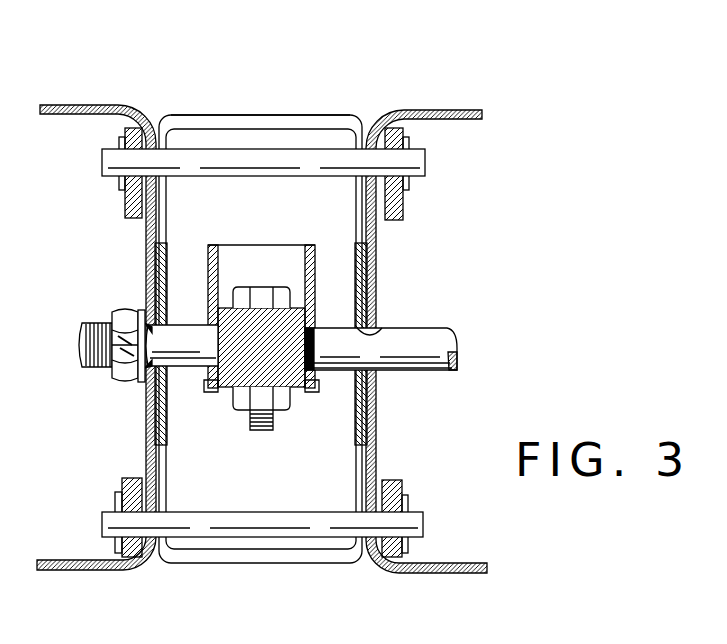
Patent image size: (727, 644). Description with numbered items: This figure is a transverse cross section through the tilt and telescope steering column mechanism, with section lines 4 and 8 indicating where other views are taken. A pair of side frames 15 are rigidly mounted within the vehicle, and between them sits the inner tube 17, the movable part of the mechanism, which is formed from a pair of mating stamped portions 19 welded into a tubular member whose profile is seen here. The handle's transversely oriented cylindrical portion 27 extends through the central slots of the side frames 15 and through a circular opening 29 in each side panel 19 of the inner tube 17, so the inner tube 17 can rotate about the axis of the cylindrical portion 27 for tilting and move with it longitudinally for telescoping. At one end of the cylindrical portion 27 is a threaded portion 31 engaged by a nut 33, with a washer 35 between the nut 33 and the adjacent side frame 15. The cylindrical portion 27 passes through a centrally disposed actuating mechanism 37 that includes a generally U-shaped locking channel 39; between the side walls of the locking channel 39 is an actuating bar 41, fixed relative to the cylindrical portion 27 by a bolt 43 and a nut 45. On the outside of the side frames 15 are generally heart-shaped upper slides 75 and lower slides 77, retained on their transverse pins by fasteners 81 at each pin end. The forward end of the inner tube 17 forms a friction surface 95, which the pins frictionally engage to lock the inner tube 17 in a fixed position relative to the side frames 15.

The section line 4- 4 is at (262, 619).
The section line 8- 8 is at (284, 433).
The side frame 15 is at (56, 104).
The inner tube 17 is at (233, 113).
The stamped portion 19 is at (180, 118).
The cylindrical portion 27 is at (440, 338).
The circular opening 29 is at (374, 332).
The threaded portion 31 is at (88, 362).
The nut 33 is at (126, 312).
The washer 35 is at (141, 384).
The actuating mechanism 37 is at (233, 246).
The locking channel 39 is at (206, 278).
The actuating bar 41 is at (243, 340).
The bolt 43 is at (266, 290).
The nut 45 is at (246, 398).
The upper slide 75 is at (125, 205).
The lower slide 77 is at (128, 478).
The fastener 81 is at (120, 142).
The friction surface 95 is at (152, 128).